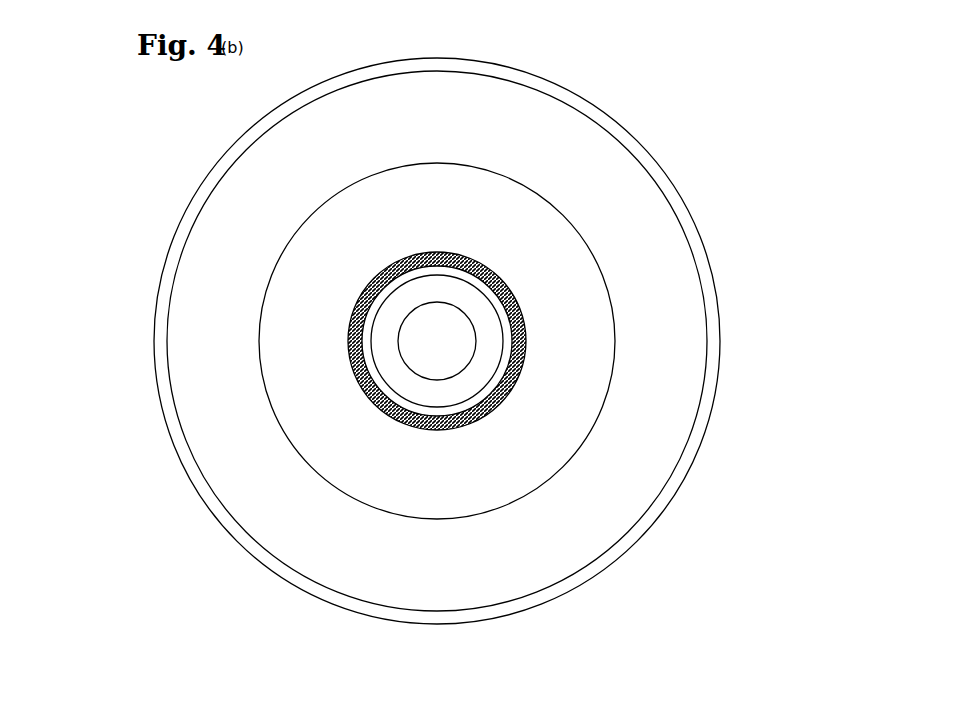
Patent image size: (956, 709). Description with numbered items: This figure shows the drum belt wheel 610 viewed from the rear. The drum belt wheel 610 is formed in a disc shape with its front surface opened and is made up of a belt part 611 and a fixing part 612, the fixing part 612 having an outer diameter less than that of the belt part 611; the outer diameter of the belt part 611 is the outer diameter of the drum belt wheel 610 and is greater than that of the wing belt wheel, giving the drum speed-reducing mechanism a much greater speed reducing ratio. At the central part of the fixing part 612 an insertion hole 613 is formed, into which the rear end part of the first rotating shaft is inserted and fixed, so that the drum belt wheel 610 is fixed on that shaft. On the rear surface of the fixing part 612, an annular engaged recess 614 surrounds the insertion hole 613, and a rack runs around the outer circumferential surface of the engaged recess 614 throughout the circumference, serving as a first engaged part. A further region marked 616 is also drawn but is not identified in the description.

The drum belt wheel 610 is at (685, 140).
The belt part 611 is at (583, 137).
The fixing part 612 is at (598, 303).
The insertion hole 613 is at (415, 318).
The engaged recess 614 is at (428, 265).
The inner peripheral region 616 is at (491, 288).